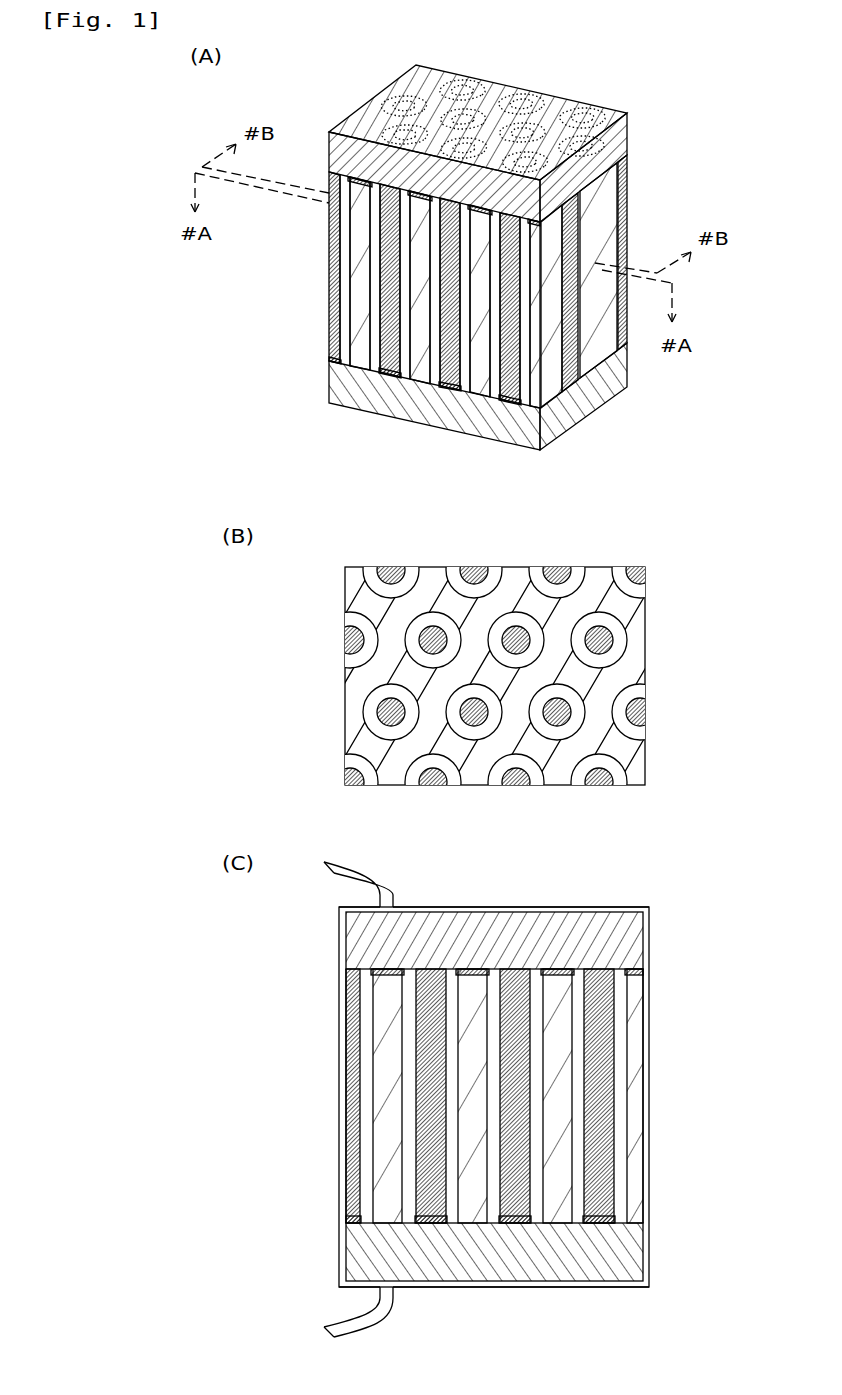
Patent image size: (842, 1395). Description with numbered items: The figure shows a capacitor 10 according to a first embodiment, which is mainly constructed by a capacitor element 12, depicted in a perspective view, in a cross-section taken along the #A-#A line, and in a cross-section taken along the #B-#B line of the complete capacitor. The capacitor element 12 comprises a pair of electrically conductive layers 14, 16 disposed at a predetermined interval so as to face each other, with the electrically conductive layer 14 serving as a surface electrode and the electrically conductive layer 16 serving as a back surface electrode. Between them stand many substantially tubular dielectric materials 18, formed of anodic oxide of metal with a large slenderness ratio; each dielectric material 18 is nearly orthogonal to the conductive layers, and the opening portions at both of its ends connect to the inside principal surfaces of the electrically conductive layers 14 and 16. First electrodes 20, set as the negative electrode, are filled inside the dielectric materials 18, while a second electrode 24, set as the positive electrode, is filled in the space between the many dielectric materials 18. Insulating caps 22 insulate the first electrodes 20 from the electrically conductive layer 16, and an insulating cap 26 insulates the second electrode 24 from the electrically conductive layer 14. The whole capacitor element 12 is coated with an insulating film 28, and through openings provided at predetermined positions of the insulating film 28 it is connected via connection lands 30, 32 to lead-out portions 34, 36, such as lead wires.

The capacitor 10 is at (707, 935).
The capacitor element 12 is at (703, 385).
The electrically conductive layer 14 is at (488, 78).
The electrically conductive layer 16 is at (590, 410).
The dielectric material 18 is at (345, 216).
The first electrode 20 is at (388, 326).
The insulating cap 22 is at (374, 362).
The second electrode 24 is at (358, 245).
The insulating cap 26 is at (352, 186).
The insulating film 28 is at (548, 907).
The connection land 30 is at (389, 903).
The connection land 32 is at (387, 1290).
The lead-out portion 34 is at (325, 880).
The lead-out portion 36 is at (326, 1320).